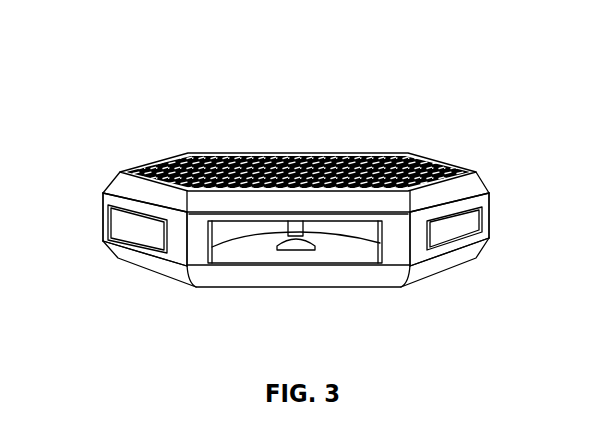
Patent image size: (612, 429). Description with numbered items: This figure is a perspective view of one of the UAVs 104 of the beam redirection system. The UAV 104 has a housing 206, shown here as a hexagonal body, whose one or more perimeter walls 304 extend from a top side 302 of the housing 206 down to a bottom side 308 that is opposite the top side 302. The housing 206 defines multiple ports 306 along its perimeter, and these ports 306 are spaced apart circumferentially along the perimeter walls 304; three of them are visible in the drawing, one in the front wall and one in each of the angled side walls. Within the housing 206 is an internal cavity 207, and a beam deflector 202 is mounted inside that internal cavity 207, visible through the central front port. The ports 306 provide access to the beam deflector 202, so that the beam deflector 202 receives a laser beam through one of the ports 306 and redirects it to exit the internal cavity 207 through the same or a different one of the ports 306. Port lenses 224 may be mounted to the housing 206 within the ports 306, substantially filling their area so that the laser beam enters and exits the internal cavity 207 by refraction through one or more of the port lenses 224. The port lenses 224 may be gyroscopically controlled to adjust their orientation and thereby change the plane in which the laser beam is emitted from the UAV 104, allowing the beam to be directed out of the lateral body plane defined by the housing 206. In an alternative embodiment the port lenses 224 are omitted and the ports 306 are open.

The UAV 104 is at (165, 85).
The top side 302 is at (212, 153).
The housing 206 is at (113, 193).
The perimeter walls 304 is at (480, 190).
The bottom side 308 is at (153, 275).
The ports 306 is at (123, 228).
The port lenses 224 is at (233, 253).
The internal cavity 207 is at (357, 228).
The beam deflector 202 is at (304, 238).